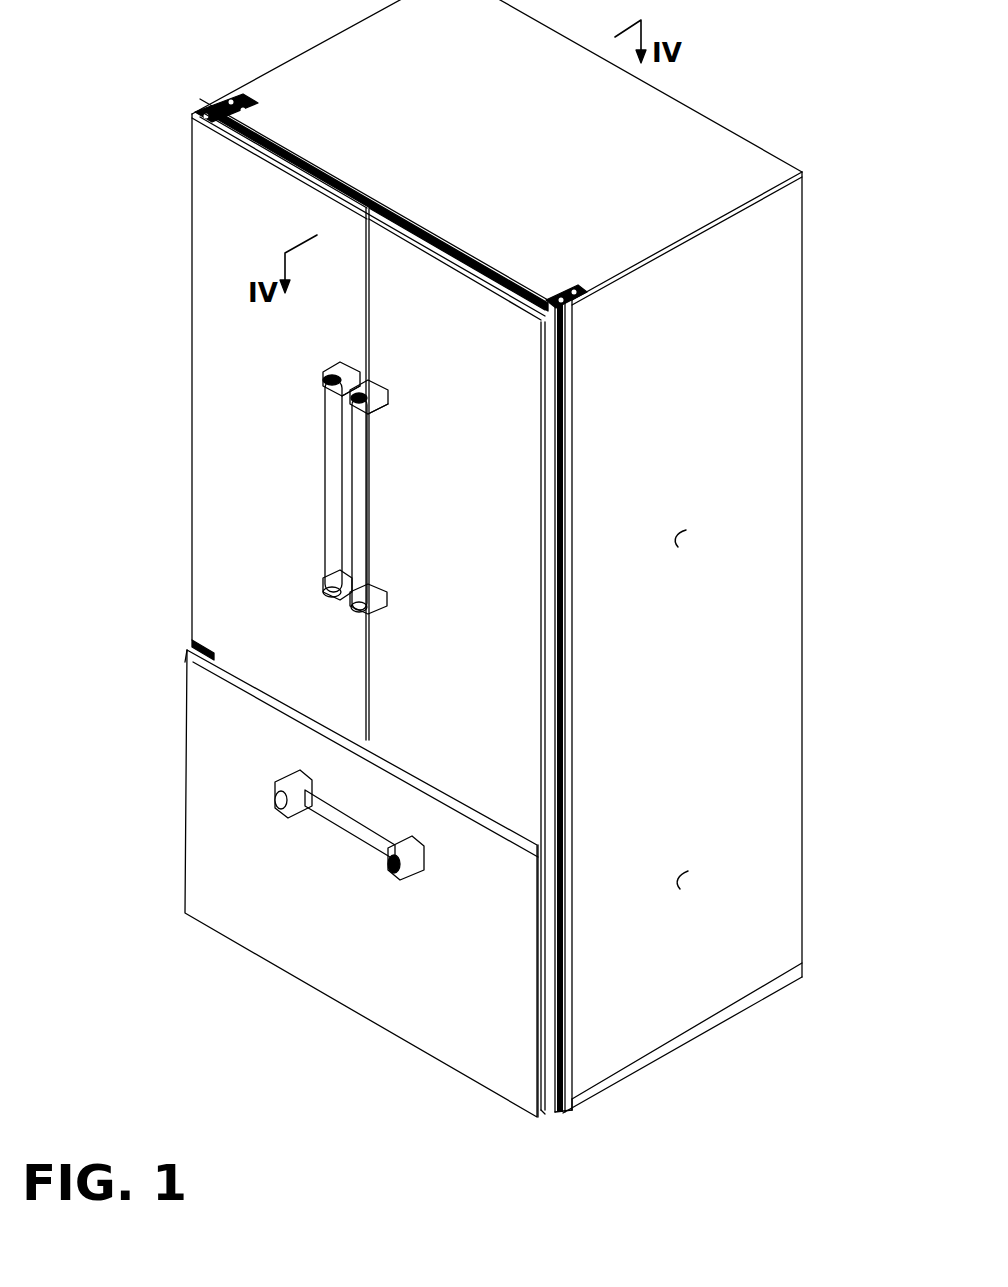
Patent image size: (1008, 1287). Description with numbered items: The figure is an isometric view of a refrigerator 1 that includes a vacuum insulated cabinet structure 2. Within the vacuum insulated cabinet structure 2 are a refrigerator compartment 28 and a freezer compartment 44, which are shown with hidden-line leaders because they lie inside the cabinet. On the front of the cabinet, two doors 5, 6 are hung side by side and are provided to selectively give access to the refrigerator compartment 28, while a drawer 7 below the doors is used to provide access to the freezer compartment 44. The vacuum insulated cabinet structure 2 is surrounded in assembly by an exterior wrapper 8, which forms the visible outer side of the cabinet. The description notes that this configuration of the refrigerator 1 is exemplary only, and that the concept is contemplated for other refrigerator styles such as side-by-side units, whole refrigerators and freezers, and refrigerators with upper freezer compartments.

The refrigerator 1 is at (757, 98).
The vacuum insulated cabinet structure 2 is at (812, 475).
The door 5 is at (255, 427).
The door 6 is at (435, 650).
The drawer 7 is at (242, 770).
The exterior wrapper 8 is at (748, 363).
The refrigerator compartment 28 is at (690, 545).
The freezer compartment 44 is at (690, 884).